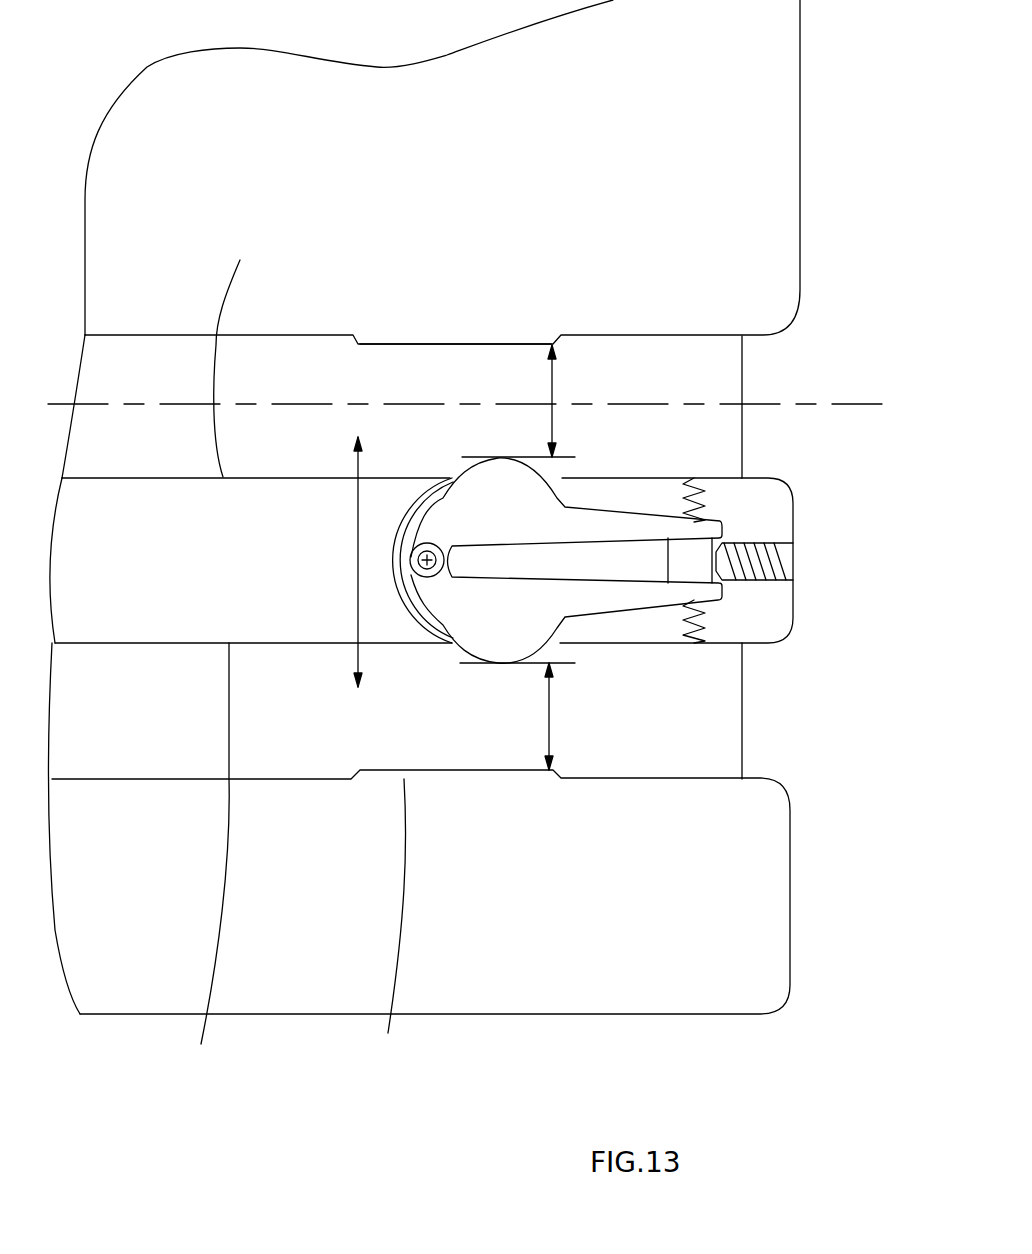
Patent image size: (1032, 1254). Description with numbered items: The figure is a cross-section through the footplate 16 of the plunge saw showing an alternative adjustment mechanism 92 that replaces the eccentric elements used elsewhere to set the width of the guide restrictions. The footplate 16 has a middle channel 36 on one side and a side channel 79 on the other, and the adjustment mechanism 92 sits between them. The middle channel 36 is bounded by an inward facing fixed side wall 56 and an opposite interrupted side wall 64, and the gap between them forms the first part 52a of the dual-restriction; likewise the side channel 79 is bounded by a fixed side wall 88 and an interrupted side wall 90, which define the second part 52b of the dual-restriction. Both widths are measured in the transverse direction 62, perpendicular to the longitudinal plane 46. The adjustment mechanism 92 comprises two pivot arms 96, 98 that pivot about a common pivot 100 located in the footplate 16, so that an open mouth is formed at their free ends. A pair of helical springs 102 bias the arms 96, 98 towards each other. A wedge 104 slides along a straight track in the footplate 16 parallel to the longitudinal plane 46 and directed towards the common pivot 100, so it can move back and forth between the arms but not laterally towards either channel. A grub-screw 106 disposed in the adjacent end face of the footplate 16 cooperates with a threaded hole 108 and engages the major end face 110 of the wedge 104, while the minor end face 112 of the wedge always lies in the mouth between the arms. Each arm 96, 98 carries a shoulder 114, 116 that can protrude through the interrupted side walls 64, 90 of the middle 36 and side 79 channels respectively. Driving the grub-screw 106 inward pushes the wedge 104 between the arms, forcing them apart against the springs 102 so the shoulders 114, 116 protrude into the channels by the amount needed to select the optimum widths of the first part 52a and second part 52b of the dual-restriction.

The footplate 16 is at (521, 104).
The middle channel 36 is at (151, 382).
The longitudinal plane 46 is at (849, 402).
The first part of dual-restriction 52a is at (605, 347).
The second part of dual-restriction 52b is at (550, 717).
The fixed side wall 56 is at (381, 344).
The transverse direction 62 is at (355, 568).
The interrupted side wall 64 is at (240, 350).
The side channel 79 is at (135, 743).
The fixed side wall 88 is at (394, 931).
The interrupted side wall 90 is at (207, 863).
The adjustment mechanism 92 is at (572, 623).
The pivot arm 96 is at (516, 519).
The pivot arm 98 is at (520, 619).
The common pivot 100 is at (430, 565).
The helical springs 102 is at (703, 500).
The wedge 104 is at (688, 570).
The grub-screw 106 is at (768, 553).
The threaded hole 108 is at (768, 580).
The major end face 110 is at (715, 580).
The minor end face 112 is at (667, 557).
The shoulder 114 is at (548, 484).
The shoulder 116 is at (523, 655).